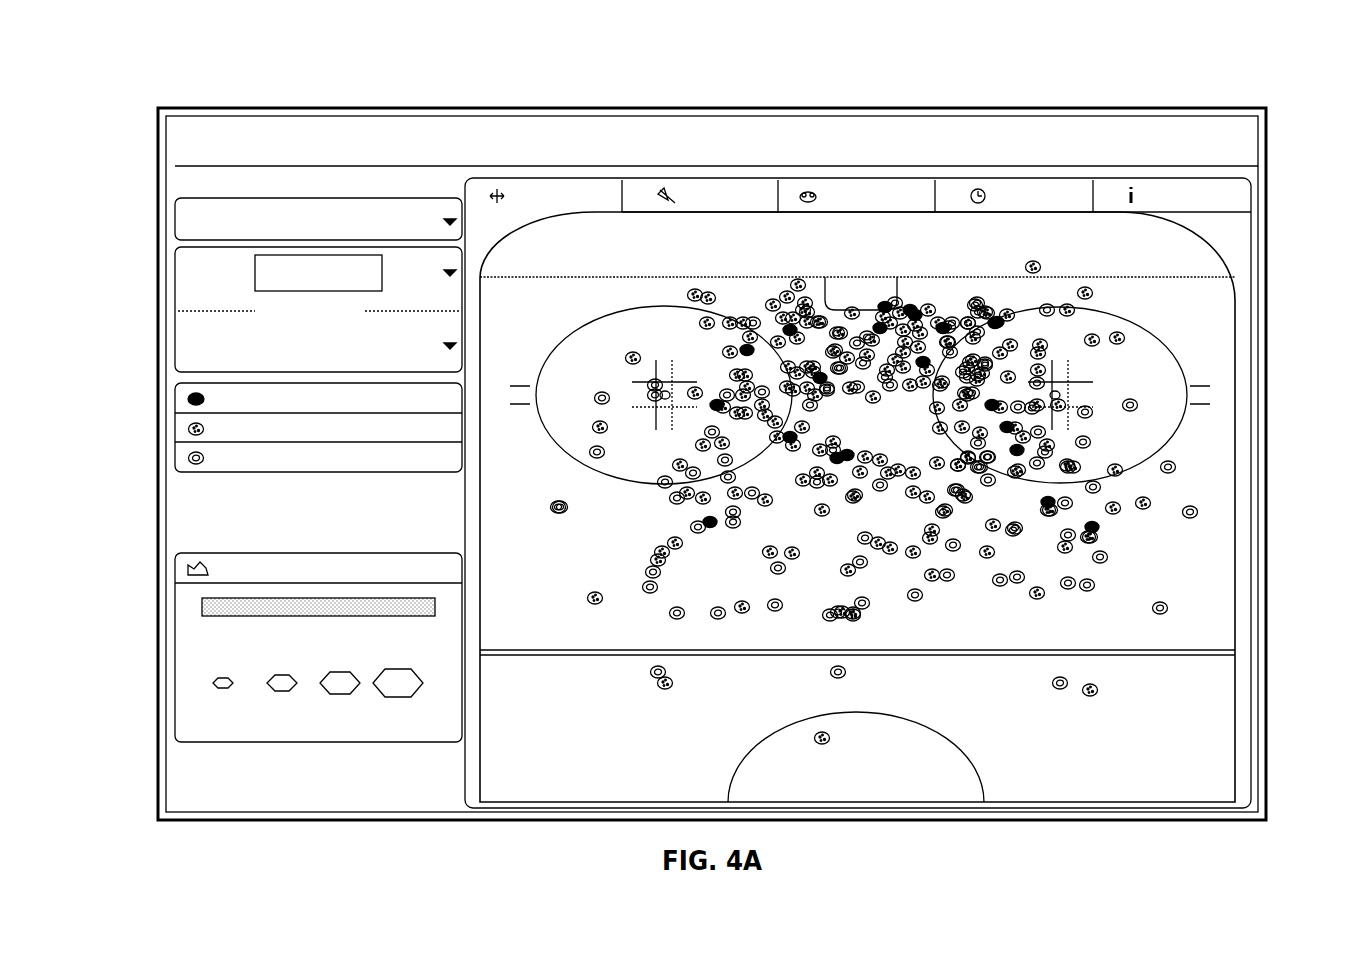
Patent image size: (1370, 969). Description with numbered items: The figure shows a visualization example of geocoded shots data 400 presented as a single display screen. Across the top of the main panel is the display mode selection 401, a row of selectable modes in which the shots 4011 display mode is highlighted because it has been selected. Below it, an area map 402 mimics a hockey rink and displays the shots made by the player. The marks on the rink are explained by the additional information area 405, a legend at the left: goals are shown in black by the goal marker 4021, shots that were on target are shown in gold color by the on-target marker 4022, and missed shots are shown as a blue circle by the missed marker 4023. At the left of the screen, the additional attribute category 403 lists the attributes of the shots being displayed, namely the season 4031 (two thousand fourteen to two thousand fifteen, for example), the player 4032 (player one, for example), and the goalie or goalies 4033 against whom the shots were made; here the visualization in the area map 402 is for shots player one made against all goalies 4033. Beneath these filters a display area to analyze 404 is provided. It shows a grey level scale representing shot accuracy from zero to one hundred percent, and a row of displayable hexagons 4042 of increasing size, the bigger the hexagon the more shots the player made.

The geocoded shots data 400 is at (194, 50).
The display mode selection 401 is at (785, 178).
The shots display mode 4011 is at (548, 178).
The area map 402 is at (1068, 240).
The goal shot marker 4021 is at (1100, 294).
The on-target shot marker 4022 is at (1105, 406).
The missed shot marker 4023 is at (1107, 527).
The additional attribute category 403 is at (222, 190).
The season 4031 is at (188, 222).
The player 4032 is at (248, 268).
The goalie 4033 is at (243, 347).
The display area to analyze 404 is at (217, 778).
The displayable hexagon 4042 is at (265, 700).
The additional information area 405 is at (172, 433).